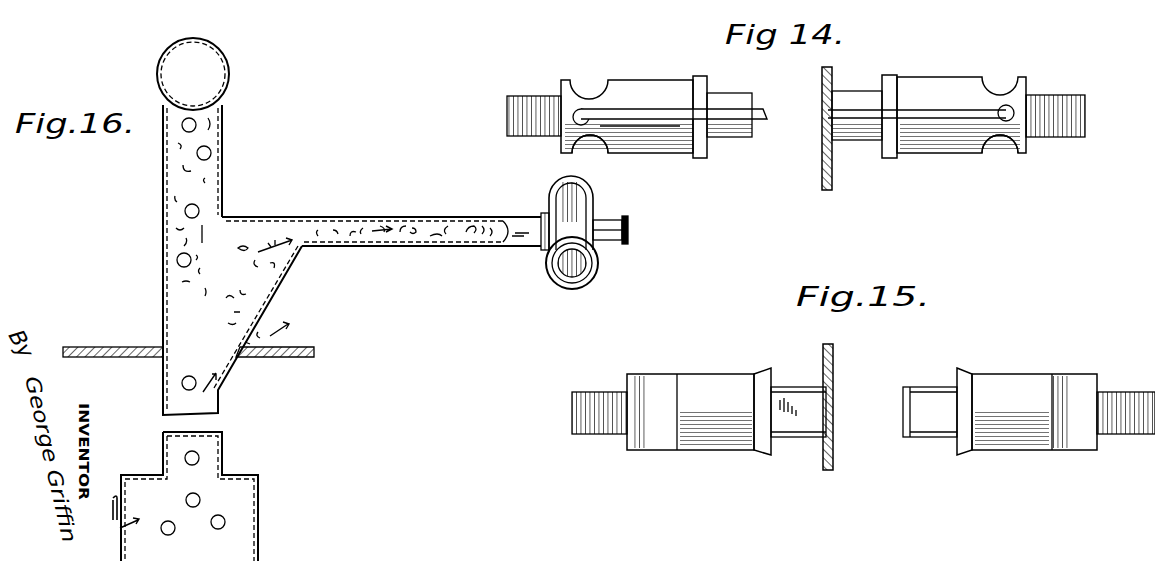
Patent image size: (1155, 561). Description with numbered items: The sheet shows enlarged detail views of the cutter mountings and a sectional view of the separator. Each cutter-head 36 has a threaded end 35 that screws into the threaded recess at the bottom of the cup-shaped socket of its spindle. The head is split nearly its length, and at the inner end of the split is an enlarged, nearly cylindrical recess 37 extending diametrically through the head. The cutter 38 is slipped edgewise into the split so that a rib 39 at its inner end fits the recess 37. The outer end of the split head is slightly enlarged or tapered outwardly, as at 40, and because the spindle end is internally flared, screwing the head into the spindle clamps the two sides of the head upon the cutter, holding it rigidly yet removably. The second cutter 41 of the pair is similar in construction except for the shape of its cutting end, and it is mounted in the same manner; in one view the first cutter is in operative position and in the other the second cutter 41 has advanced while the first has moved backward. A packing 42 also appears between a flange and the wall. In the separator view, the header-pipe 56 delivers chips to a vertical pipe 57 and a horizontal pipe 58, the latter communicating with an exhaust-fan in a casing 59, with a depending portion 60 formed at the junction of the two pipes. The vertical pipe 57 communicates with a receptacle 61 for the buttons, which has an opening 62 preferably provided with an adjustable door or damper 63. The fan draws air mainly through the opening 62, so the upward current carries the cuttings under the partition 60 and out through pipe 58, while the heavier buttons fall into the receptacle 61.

In FIG. 14, the threaded end 35 is at (1068, 140).
In FIG. 15, the threaded end 35 is at (590, 390).
In FIG. 14, the cutter-head 36 is at (648, 148).
In FIG. 15, the cutter-head 36 is at (862, 412).
In FIG. 14, the recess 37 is at (586, 139).
In FIG. 14, the cutter 38 is at (824, 120).
In FIG. 15, the cutter 38 is at (881, 407).
In FIG. 14, the rib 39 is at (582, 110).
In FIG. 14, the tapered outer end of the split head 40 is at (700, 80).
In FIG. 15, the tapered outer end of the split head 40 is at (762, 375).
In FIG. 14, the second cutter 41 is at (762, 112).
In FIG. 15, the packing 42 is at (791, 407).
In FIG. 16, the header-pipe 56 is at (193, 74).
In FIG. 16, the vertical pipe 57 is at (167, 215).
In FIG. 16, the horizontal pipe 58 is at (381, 221).
In FIG. 16, the exhaust-fan casing 59 is at (584, 232).
In FIG. 16, the depending portion 60 is at (259, 291).
In FIG. 16, the receptacle 61 is at (189, 496).
In FIG. 16, the opening 62 is at (133, 533).
In FIG. 16, the adjustable door or damper 63 is at (116, 508).